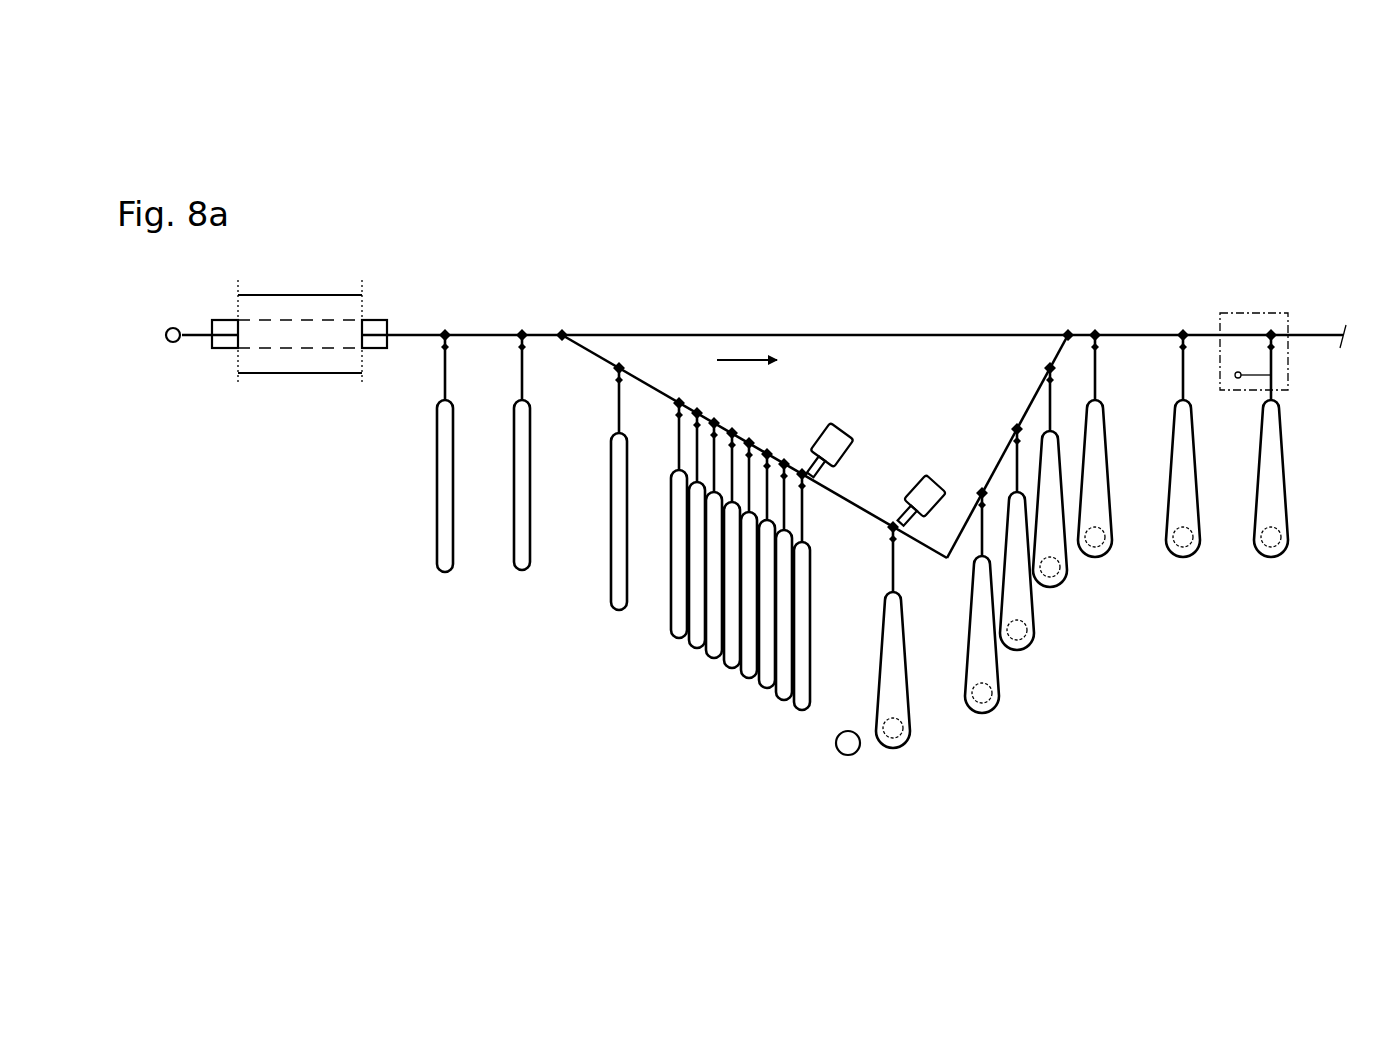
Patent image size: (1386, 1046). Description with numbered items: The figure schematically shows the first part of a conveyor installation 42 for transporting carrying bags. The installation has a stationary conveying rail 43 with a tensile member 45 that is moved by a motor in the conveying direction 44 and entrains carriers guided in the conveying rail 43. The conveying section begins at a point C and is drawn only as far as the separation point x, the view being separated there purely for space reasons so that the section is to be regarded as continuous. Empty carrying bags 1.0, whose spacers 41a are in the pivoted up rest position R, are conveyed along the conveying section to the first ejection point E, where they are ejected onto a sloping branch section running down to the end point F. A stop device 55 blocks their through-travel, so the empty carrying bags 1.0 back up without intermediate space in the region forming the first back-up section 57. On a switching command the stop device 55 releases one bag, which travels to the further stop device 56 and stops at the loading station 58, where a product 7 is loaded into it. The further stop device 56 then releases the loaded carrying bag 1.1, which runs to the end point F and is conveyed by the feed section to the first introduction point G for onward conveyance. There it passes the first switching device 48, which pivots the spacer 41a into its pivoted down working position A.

The empty carrying bag 1.0 is at (441, 527).
The loaded carrying bag 1.1 is at (895, 688).
The product to be conveyed 7 is at (910, 738).
The spacer 41a is at (613, 387).
The conveyor installation 42 is at (313, 610).
The conveying rail 43 is at (306, 363).
The conveying direction 44 is at (752, 367).
The tensile member 45 is at (226, 342).
The first switching device 48 is at (1281, 321).
The stop device 55 is at (838, 436).
The further stop device 56 is at (929, 489).
The first back-up section 57 is at (716, 686).
The loading station 58 is at (836, 749).
The point C is at (170, 343).
The first ejection point E is at (563, 332).
The end point F is at (946, 567).
The first introduction point G is at (1066, 330).
The pivoted up rest position R is at (512, 353).
The pivoted down working position A is at (1212, 432).
The separation point x is at (1364, 337).